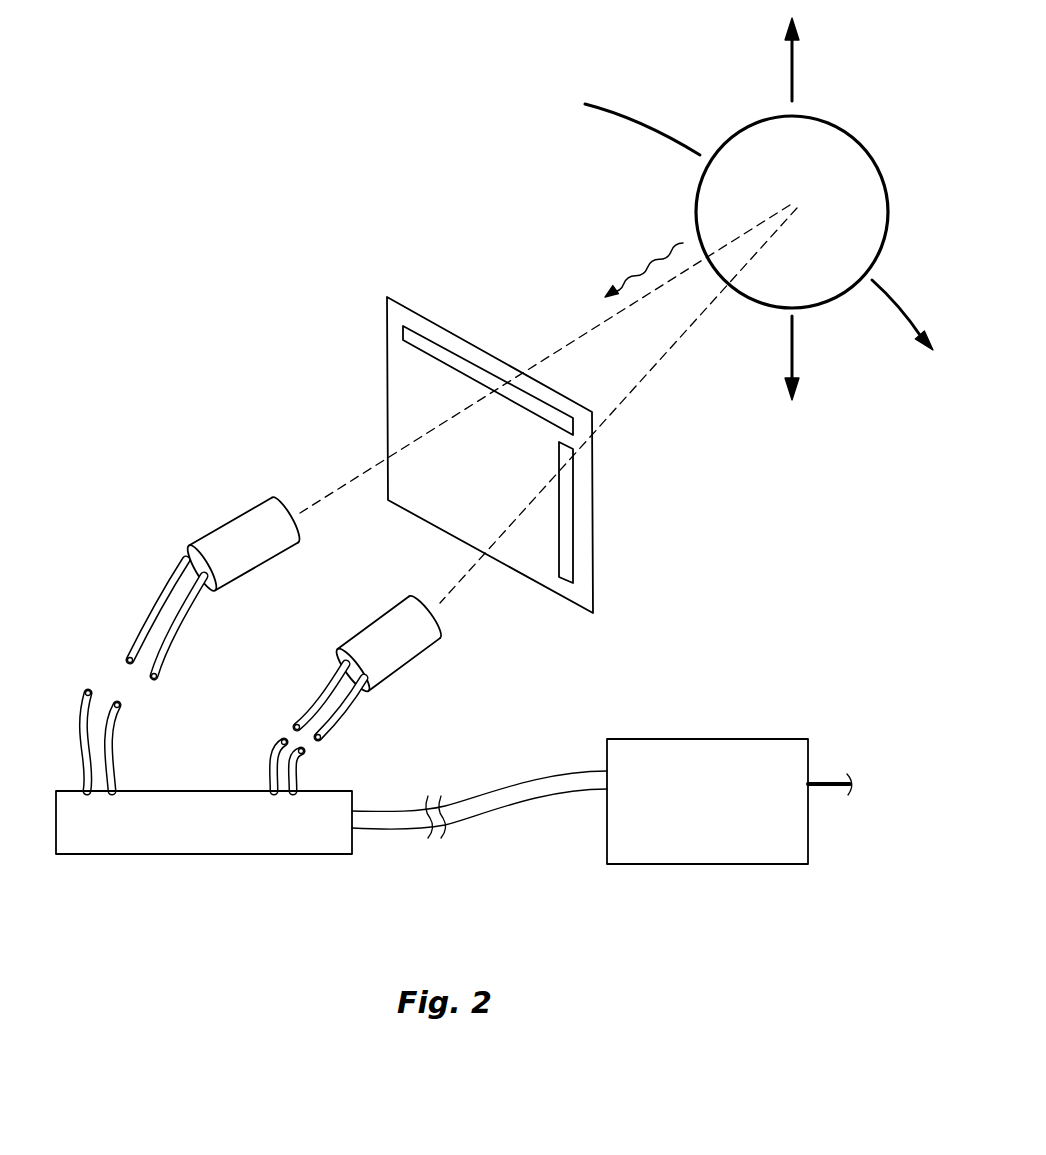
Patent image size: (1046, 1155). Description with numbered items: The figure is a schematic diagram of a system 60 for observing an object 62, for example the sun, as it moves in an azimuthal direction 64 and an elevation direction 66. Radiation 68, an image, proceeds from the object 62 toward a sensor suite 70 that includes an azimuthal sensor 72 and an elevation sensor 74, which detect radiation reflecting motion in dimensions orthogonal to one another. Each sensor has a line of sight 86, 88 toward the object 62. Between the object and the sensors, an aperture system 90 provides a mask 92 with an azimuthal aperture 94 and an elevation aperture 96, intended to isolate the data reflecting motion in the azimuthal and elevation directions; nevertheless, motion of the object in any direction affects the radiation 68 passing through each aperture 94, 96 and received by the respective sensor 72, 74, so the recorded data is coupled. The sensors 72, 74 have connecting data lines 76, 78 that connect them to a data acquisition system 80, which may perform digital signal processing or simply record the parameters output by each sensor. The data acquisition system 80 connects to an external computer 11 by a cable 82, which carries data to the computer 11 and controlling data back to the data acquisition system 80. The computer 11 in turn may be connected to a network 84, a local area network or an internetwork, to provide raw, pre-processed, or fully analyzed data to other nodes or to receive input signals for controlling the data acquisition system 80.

The computer 11 is at (740, 742).
The system 60 is at (544, 404).
The object 62 is at (850, 136).
The azimuthal direction 64 is at (903, 313).
The elevation direction 66 is at (790, 58).
The radiation 68 is at (683, 243).
The sensor suite 70 is at (212, 612).
The azimuthal sensor 72 is at (222, 538).
The elevation sensor 74 is at (428, 604).
The connecting data line 76 is at (140, 642).
The connecting data line 78 is at (305, 778).
The data acquisition system 80 is at (328, 846).
The cable 82 is at (512, 790).
The network 84 is at (825, 780).
The line of sight 86 is at (542, 353).
The line of sight 88 is at (668, 350).
The aperture system 90 is at (491, 428).
The mask 92 is at (393, 373).
The azimuthal aperture 94 is at (555, 416).
The elevation aperture 96 is at (574, 524).